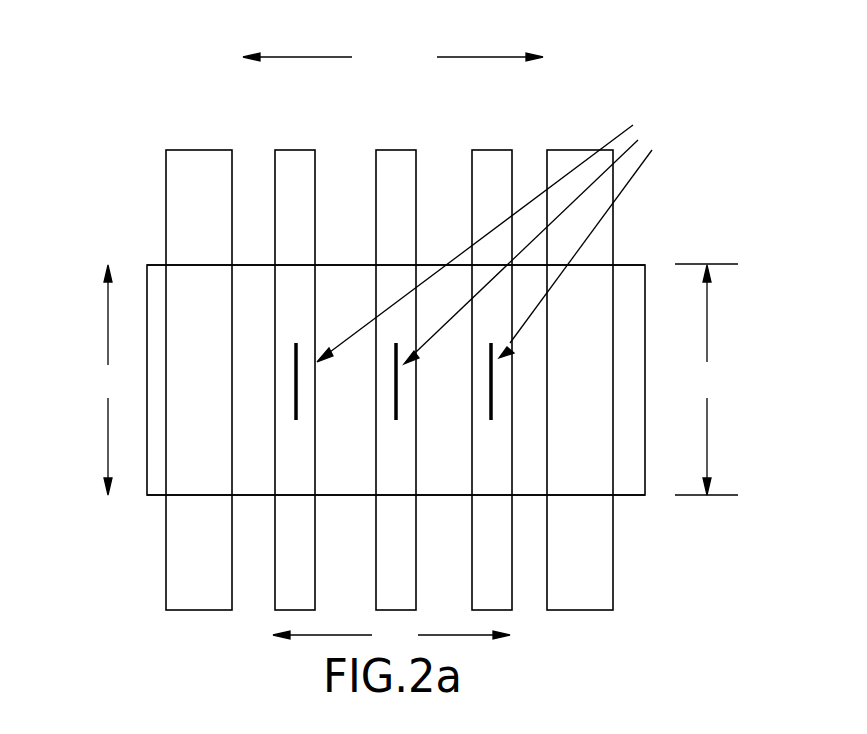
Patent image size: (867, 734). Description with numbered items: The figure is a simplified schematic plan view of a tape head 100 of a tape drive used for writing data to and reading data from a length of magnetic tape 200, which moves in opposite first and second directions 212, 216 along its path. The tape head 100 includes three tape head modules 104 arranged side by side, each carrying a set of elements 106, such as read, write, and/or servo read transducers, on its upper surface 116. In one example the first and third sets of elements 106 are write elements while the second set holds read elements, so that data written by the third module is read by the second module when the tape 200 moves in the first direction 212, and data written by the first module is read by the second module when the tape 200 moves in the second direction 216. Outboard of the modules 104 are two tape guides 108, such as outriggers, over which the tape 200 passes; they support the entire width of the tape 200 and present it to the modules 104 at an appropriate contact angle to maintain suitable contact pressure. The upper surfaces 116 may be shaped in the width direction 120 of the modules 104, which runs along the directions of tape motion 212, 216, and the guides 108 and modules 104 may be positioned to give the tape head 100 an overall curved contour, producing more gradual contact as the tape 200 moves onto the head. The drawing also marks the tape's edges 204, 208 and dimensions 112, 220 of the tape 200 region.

The tape head 100 is at (116, 170).
The tape head module 104 is at (493, 149).
The elements 106 is at (489, 390).
The tape guide 108 is at (580, 149).
The tape height dimension 112 is at (109, 380).
The upper surface 116 is at (491, 473).
The width direction 120 is at (391, 635).
The magnetic tape 200 is at (112, 514).
The tape lower edge 204 is at (157, 497).
The tape upper edge 208 is at (157, 264).
The first direction 212 is at (288, 56).
The second direction 216 is at (480, 56).
The tape width 220 is at (706, 379).